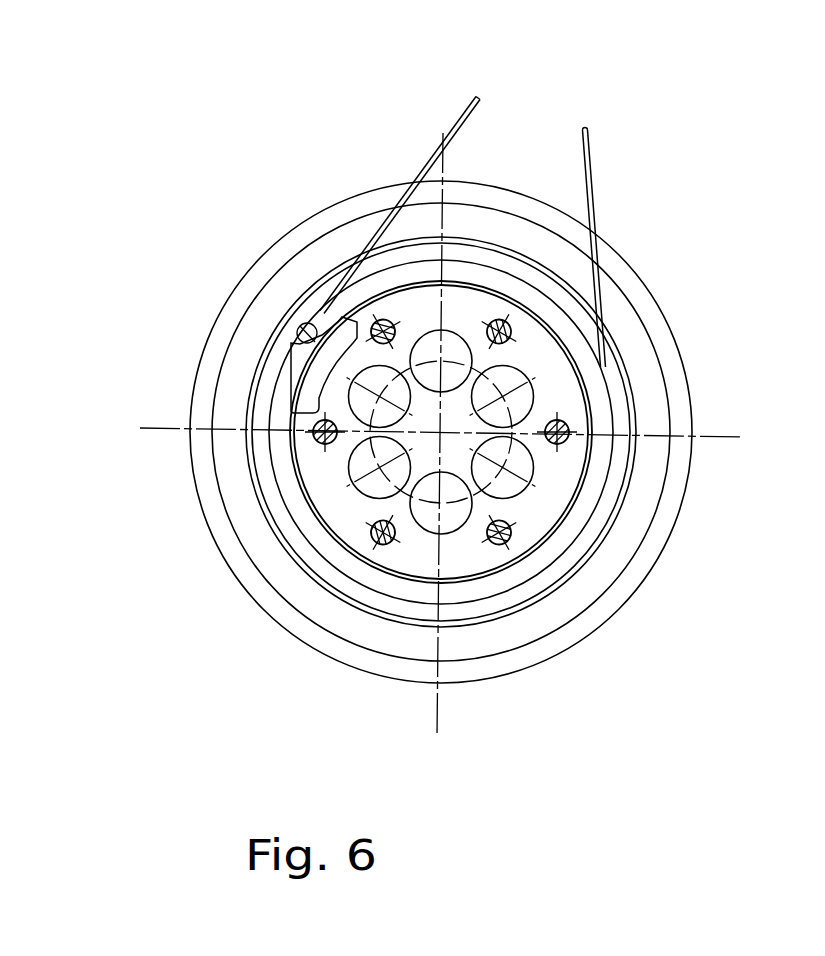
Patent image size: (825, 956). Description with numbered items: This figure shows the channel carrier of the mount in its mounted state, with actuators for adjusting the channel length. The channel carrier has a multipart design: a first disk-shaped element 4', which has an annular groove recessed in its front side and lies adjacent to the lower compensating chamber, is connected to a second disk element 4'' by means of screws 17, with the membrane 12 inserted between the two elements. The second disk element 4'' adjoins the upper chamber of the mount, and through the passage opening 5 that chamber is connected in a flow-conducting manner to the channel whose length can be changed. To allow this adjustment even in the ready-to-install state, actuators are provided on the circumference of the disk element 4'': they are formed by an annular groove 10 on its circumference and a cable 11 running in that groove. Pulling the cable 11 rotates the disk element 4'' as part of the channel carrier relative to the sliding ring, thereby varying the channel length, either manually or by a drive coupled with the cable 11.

The second disk element 4'' is at (454, 292).
The first disk-shaped element 4' is at (441, 488).
The passage opening 5 is at (280, 255).
The annular groove 10 is at (529, 432).
The cable 11 is at (670, 210).
The membrane 12 is at (244, 528).
The screws 17 is at (667, 522).